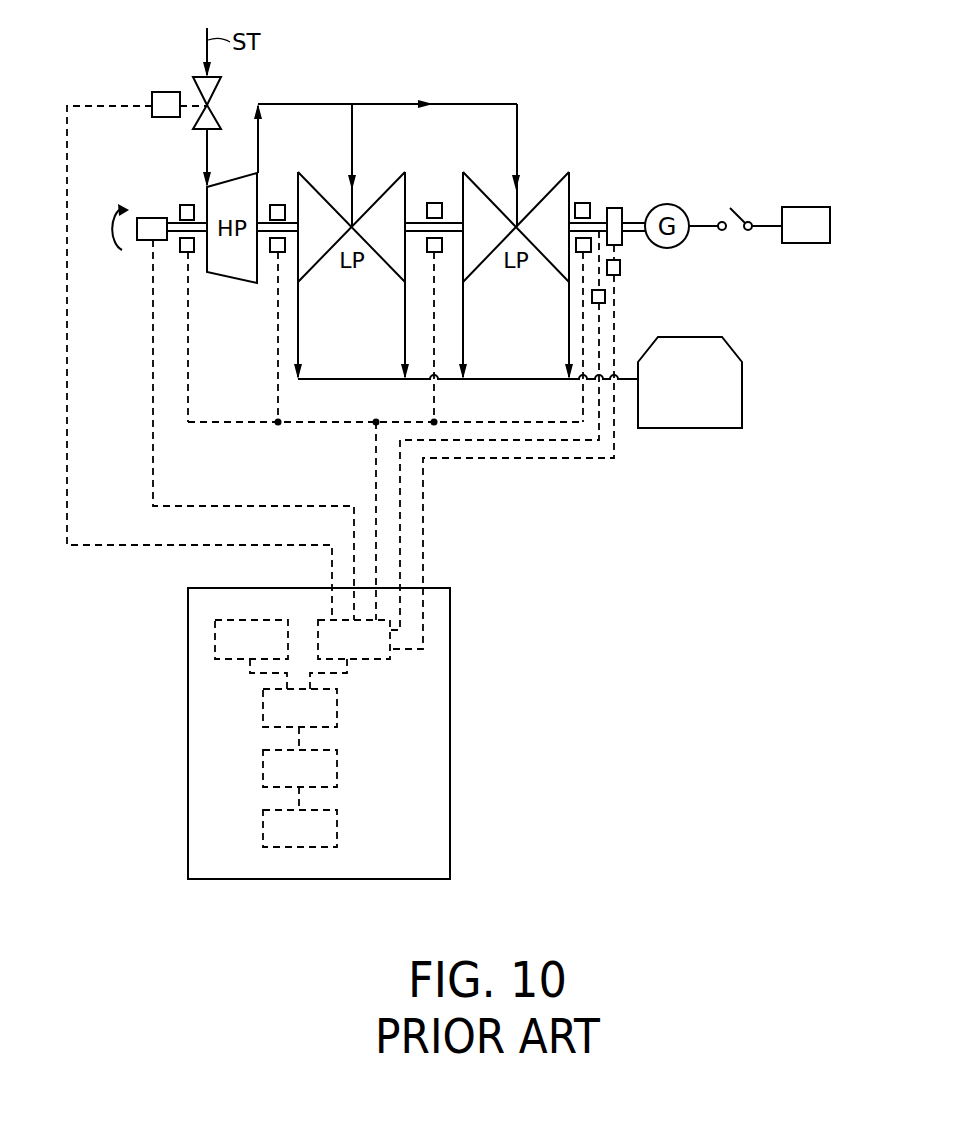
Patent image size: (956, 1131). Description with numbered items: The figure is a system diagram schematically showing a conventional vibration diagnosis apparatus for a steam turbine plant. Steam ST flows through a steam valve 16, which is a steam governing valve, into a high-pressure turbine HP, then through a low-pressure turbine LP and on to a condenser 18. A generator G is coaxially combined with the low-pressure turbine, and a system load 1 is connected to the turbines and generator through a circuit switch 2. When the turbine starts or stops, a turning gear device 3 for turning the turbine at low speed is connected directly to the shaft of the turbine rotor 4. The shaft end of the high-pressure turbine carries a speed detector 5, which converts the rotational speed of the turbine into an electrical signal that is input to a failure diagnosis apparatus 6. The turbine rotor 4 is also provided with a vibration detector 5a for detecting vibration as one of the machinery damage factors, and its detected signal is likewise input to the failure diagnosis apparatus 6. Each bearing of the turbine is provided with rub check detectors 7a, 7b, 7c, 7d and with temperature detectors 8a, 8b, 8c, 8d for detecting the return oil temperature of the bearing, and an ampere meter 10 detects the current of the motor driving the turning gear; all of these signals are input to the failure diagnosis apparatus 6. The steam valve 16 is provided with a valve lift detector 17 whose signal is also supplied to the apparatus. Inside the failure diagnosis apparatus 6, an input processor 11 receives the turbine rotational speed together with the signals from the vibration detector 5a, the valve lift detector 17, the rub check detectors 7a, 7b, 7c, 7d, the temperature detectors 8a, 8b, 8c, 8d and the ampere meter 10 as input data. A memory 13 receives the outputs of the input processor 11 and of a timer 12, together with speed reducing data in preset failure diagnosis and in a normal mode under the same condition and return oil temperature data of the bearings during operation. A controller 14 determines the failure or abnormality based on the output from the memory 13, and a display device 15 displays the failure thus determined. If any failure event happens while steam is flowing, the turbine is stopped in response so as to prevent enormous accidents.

The system load 1 is at (804, 207).
The circuit switch 2 is at (732, 208).
The turning gear device 3 is at (615, 208).
The turbine rotor 4 is at (418, 223).
The speed detector 5 is at (150, 218).
The vibration detector 5a is at (605, 297).
The failure diagnosis apparatus 6 is at (188, 600).
The rub check detector 7a is at (186, 252).
The rub check detector 7b is at (278, 252).
The rub check detector 7c is at (435, 252).
The rub check detector 7d is at (582, 252).
The temperature detector 8a is at (186, 205).
The temperature detector 8b is at (278, 205).
The temperature detector 8c is at (435, 203).
The temperature detector 8d is at (582, 203).
The ampere meter 10 is at (620, 267).
The input processor 11 is at (370, 660).
The timer 12 is at (232, 660).
The memory 13 is at (337, 712).
The controller 14 is at (337, 772).
The display device 15 is at (337, 832).
The steam valve 16 is at (221, 86).
The valve lift detector 17 is at (166, 92).
The condenser 18 is at (742, 393).